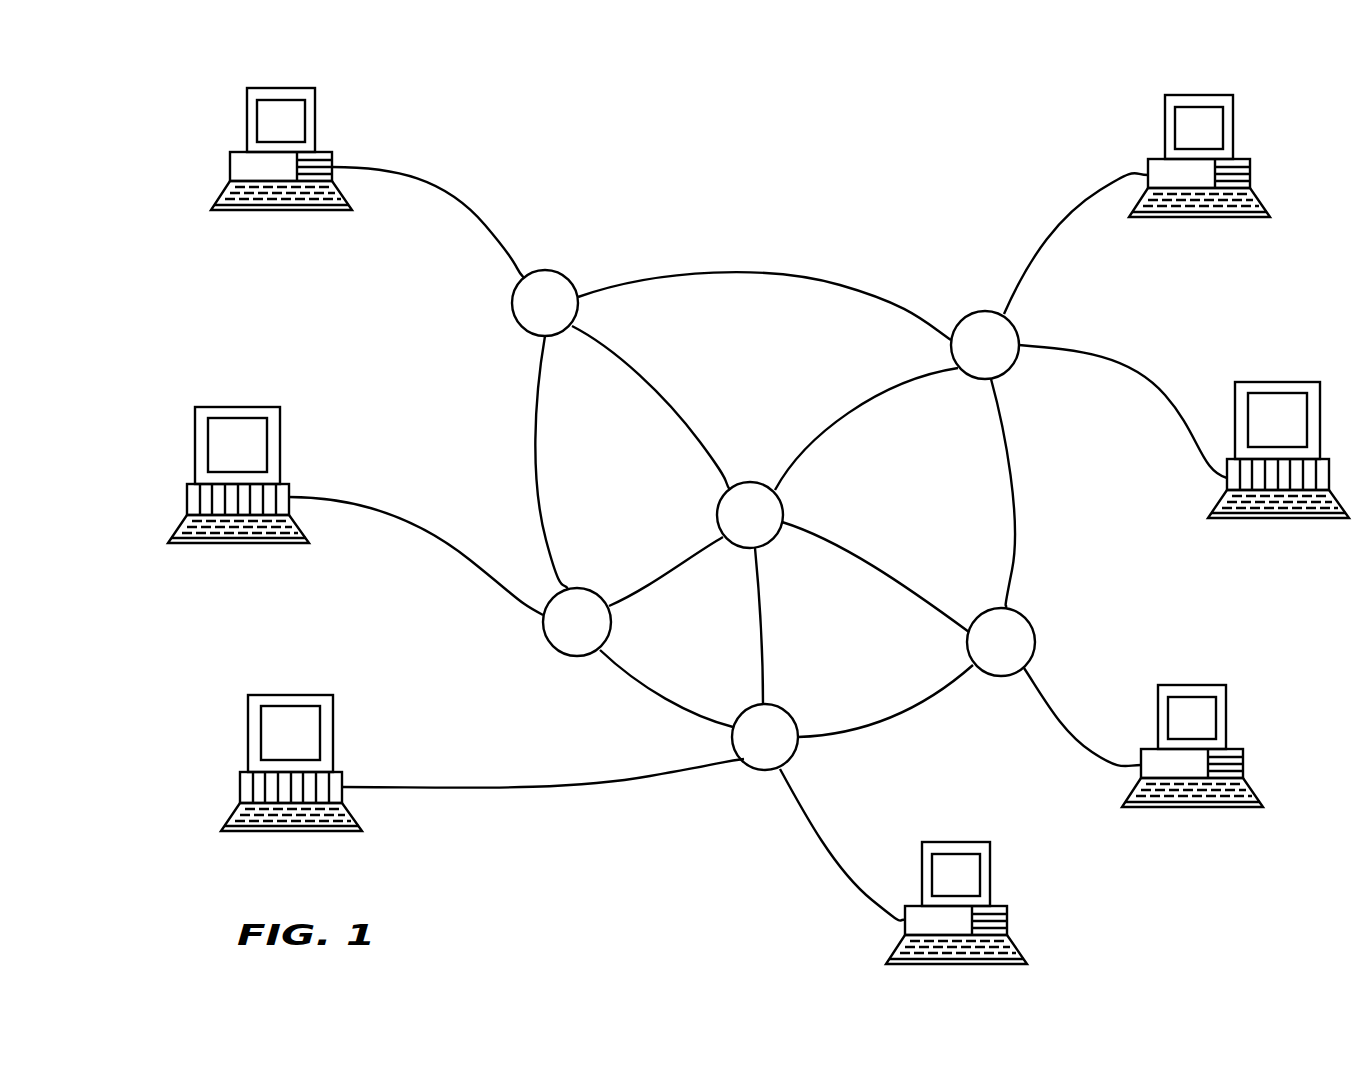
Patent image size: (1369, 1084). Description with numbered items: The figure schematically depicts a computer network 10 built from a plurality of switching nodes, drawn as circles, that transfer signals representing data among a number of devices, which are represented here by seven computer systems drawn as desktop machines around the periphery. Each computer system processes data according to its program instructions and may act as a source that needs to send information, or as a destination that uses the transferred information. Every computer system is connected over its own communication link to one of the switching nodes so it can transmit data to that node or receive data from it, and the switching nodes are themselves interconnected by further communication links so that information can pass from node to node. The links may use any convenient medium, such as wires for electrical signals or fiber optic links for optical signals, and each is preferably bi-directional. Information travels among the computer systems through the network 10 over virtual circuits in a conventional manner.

The computer network 10 is at (659, 152).